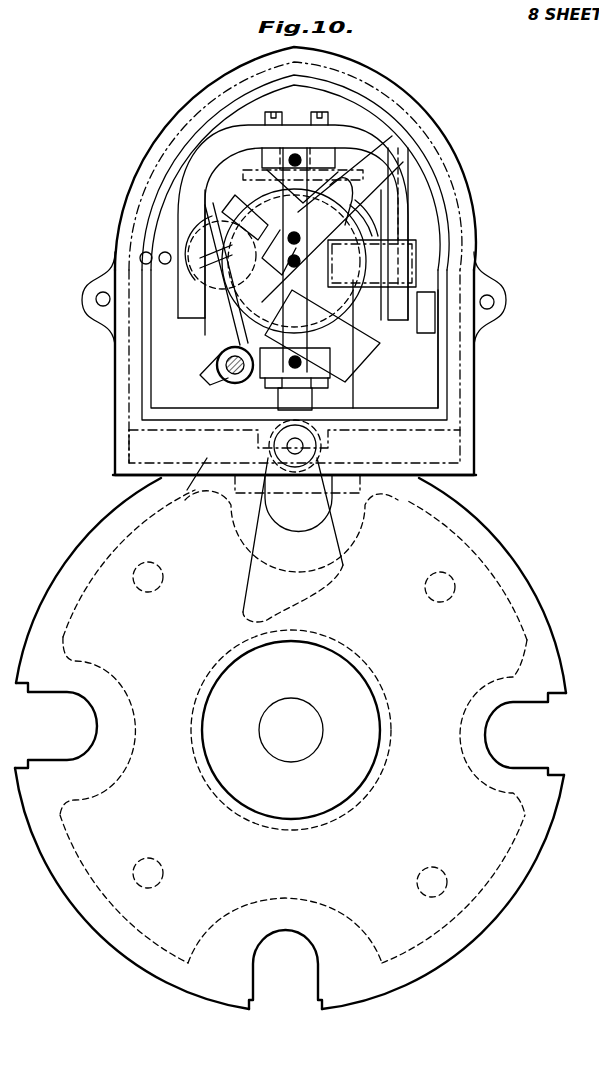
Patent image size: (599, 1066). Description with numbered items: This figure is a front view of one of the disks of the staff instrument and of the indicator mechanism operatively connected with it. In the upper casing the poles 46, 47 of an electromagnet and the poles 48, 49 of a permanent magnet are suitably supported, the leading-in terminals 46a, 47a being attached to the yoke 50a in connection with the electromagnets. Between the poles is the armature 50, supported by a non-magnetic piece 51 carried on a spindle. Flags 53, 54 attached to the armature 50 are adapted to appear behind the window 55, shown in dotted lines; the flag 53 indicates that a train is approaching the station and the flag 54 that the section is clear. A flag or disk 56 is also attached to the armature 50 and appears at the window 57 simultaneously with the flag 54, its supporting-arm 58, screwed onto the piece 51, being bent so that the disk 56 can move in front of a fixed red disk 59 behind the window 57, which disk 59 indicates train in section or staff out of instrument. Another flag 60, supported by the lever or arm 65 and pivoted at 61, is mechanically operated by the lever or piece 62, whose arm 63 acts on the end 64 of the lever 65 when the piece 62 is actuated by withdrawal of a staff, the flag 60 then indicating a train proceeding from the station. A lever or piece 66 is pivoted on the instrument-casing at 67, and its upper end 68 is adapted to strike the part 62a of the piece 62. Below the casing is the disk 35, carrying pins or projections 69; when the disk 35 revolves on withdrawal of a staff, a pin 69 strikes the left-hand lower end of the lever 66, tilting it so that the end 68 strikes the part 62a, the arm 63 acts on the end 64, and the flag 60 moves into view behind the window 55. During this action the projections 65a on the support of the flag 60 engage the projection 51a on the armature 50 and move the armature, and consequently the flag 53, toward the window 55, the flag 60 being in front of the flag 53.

The disk 35 is at (290, 733).
The pole of electromagnet 46 is at (325, 152).
The leading-in terminal 46a is at (423, 213).
The pole of electromagnet 47 is at (330, 376).
The leading-in terminal 47a is at (428, 333).
The pole of permanent magnet 48 is at (192, 306).
The pole of permanent magnet 49 is at (400, 303).
The armature 50 is at (373, 232).
The yoke 50a is at (395, 355).
The non-magnetic piece 51 is at (292, 290).
The projection on armature 51a is at (312, 300).
The flag 53 is at (427, 258).
The flag 54 is at (358, 345).
The window 55 is at (416, 272).
The flag or disk 56 is at (223, 185).
The window 57 is at (203, 283).
The supporting-arm 58 is at (249, 217).
The fixed red disk 59 is at (220, 252).
The flag 60 is at (403, 162).
The pivot 61 is at (294, 261).
The lever or piece 62 is at (130, 441).
The part of piece 62a is at (238, 386).
The arm 63 is at (228, 326).
The end of lever 64 is at (286, 270).
The lever or arm 65 is at (302, 197).
The projections 65a is at (353, 201).
The lever or piece 66 is at (250, 592).
The pivot 67 is at (303, 445).
The upper end of lever 68 is at (295, 399).
The pins or projections 69 is at (158, 577).